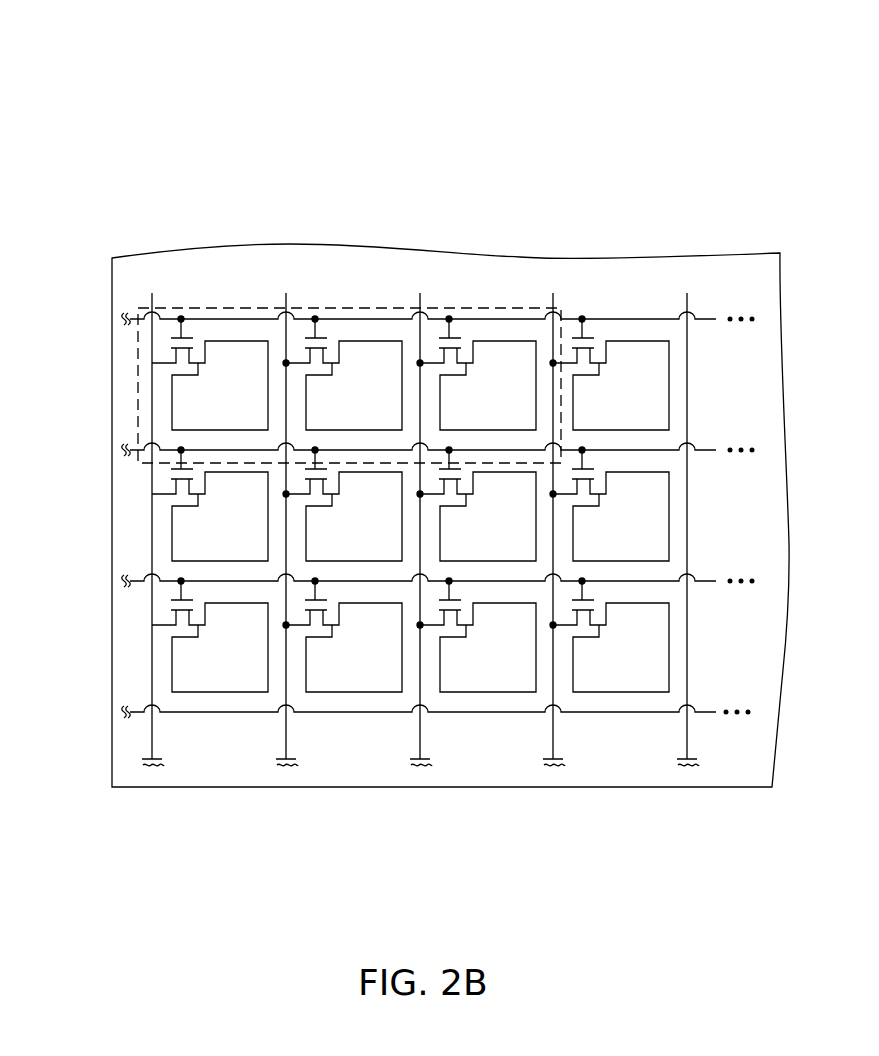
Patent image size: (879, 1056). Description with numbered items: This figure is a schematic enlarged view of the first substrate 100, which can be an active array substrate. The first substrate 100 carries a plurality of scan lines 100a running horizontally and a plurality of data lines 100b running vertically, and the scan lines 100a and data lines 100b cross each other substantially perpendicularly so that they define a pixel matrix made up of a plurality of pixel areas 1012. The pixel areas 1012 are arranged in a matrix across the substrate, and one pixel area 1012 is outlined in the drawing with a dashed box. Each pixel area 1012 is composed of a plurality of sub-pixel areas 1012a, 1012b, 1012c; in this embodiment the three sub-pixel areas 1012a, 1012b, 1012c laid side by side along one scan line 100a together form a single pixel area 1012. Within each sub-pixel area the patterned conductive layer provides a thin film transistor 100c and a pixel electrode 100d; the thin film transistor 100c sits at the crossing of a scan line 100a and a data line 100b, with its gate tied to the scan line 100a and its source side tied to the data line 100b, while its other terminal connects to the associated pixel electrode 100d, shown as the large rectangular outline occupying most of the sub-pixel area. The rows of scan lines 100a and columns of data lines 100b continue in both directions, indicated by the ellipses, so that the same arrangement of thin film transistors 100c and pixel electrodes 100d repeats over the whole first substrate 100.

The first substrate 100 is at (218, 92).
The pixel area 1012 is at (138, 408).
The sub-pixel area 1012a is at (213, 307).
The sub-pixel area 1012b is at (349, 307).
The sub-pixel area 1012c is at (487, 307).
The scan line 100a is at (137, 711).
The data line 100b is at (155, 740).
The thin film transistor 100c is at (173, 486).
The pixel electrode 100d is at (347, 678).